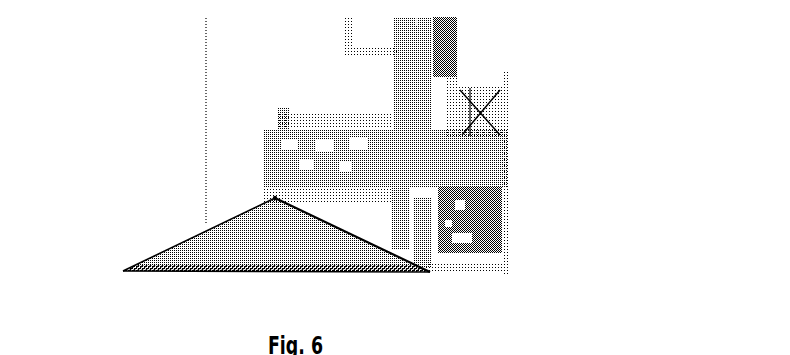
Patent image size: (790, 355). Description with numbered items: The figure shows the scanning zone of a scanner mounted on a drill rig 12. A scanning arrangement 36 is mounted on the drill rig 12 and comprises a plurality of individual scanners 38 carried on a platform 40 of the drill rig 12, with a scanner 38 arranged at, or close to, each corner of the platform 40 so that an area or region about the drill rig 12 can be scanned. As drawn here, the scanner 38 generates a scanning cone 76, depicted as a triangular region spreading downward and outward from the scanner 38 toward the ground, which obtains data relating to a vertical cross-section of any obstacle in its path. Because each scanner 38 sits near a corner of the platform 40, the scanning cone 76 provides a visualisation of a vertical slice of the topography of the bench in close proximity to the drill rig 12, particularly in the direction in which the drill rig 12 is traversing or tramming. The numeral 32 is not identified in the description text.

The drill rig 12 is at (521, 101).
The mast 32 is at (428, 53).
The scanning arrangement 36 is at (122, 204).
The scanner 38 is at (273, 197).
The platform 40 is at (487, 183).
The scanning cone 76 is at (177, 243).